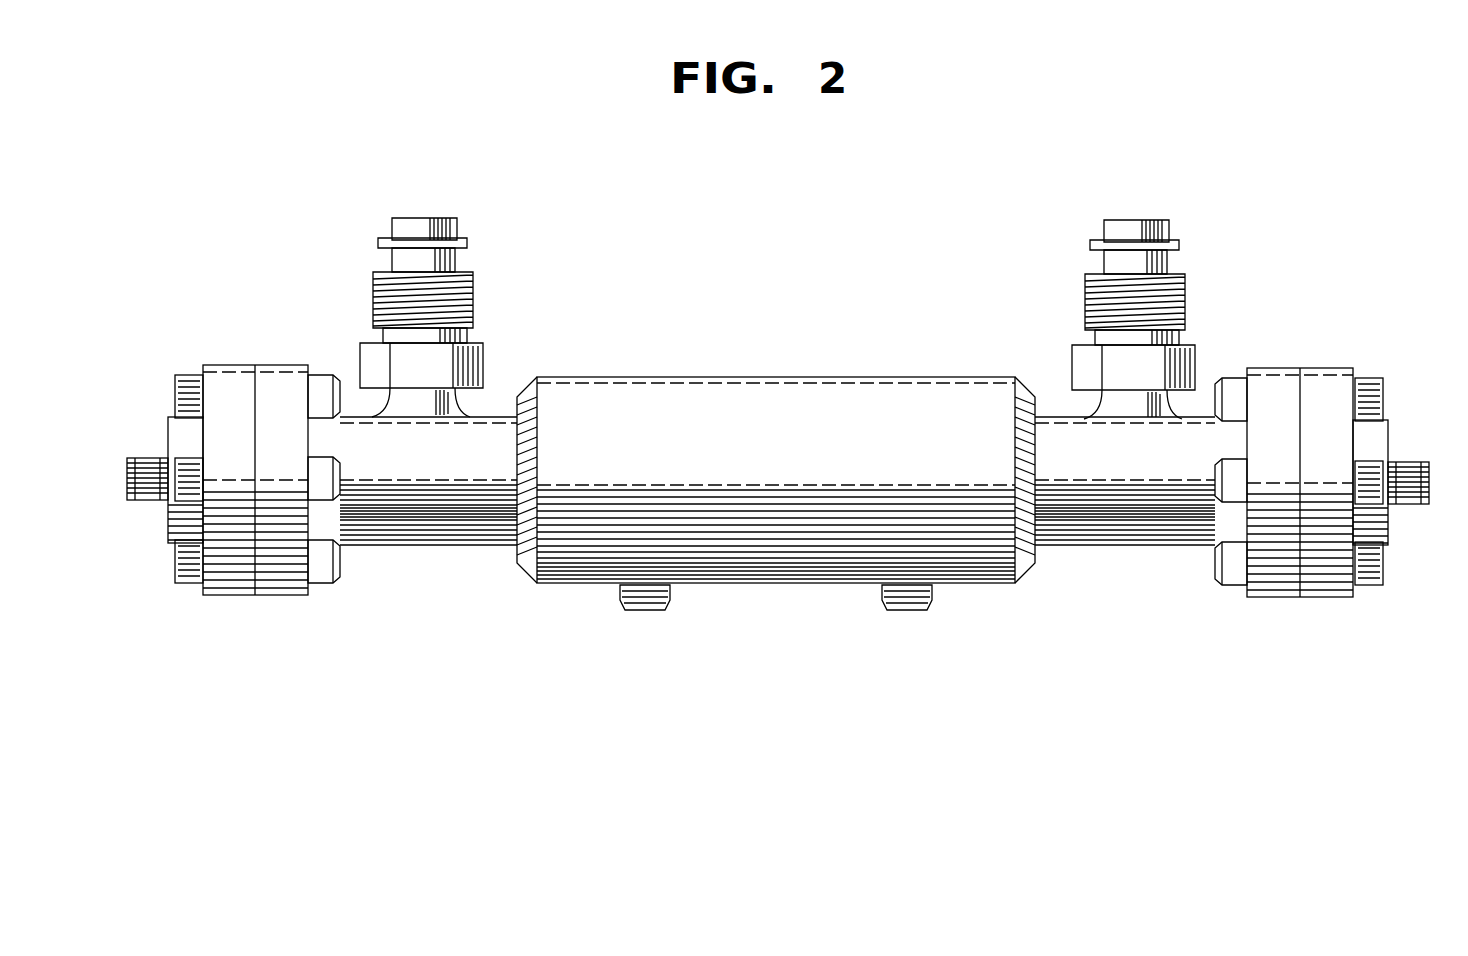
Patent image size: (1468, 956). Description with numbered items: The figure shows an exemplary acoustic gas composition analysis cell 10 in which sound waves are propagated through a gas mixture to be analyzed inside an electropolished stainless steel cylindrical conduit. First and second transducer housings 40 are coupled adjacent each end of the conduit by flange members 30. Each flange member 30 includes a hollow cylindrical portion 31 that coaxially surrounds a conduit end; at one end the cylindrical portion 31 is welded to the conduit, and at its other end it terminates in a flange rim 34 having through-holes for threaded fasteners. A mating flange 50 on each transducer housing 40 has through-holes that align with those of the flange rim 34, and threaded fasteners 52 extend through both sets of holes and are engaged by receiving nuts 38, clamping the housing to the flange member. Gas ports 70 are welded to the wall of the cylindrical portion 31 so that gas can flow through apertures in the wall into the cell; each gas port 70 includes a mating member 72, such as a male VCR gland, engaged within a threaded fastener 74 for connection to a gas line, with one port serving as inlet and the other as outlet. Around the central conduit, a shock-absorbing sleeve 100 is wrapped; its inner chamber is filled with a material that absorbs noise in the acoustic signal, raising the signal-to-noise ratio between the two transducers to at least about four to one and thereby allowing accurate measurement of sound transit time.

The acoustic gas composition analysis cell 10 is at (768, 705).
The flange member 30 is at (447, 533).
The flange member cylindrical portion 31 is at (487, 417).
The flange rim 34 is at (280, 378).
The receiving nut 38 is at (330, 562).
The transducer housing 40 is at (177, 438).
The flange 50 is at (228, 378).
The threaded fastener 52 is at (188, 377).
The gas port 70 is at (373, 228).
The mating member 72 is at (427, 220).
The threaded fastener 74 is at (460, 297).
The shock-absorbing sleeve 100 is at (772, 377).